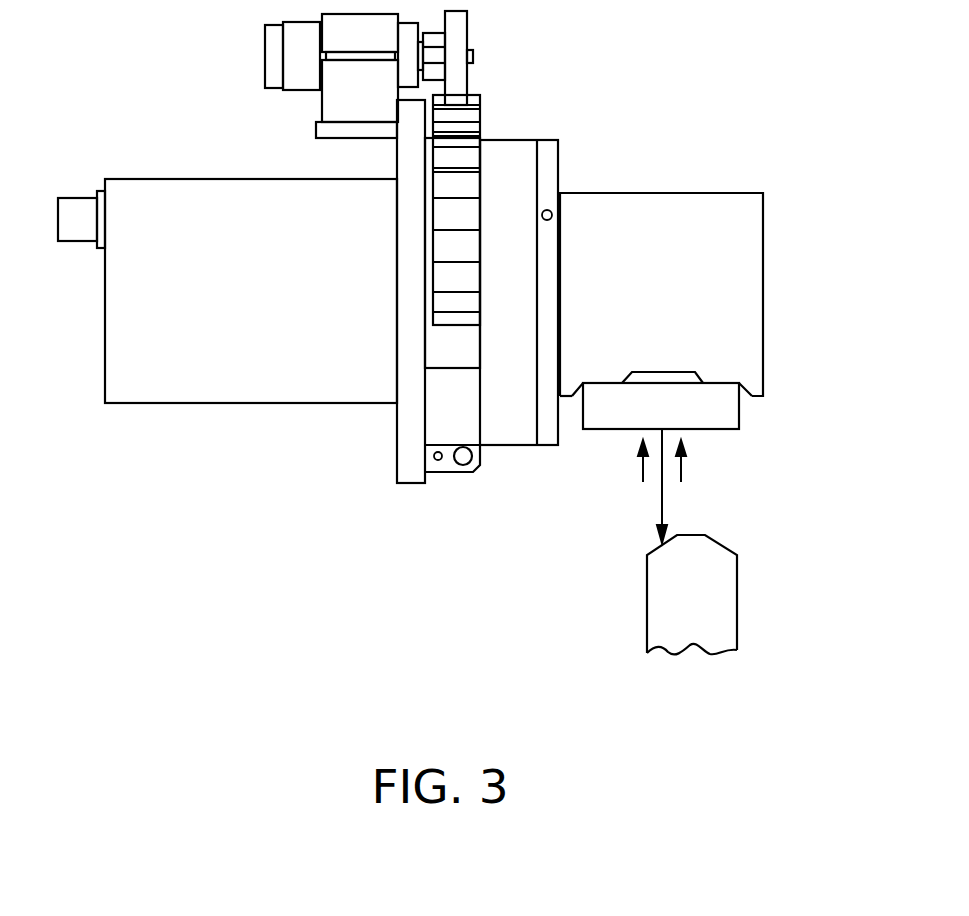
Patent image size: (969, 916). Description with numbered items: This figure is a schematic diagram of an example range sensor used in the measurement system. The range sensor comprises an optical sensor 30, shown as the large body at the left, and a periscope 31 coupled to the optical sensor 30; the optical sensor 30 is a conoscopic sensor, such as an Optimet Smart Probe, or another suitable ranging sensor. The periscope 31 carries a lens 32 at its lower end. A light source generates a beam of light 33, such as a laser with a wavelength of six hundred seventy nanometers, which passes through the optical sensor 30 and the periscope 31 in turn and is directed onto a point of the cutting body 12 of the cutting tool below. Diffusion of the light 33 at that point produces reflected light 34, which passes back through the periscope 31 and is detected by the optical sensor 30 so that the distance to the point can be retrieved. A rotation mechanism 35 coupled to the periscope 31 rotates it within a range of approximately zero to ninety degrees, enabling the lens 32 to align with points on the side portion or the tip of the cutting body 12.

The cutting body 12 is at (727, 605).
The optical sensor 30 is at (208, 390).
The periscope 31 is at (646, 202).
The lens 32 is at (730, 418).
The beam of light 33 is at (665, 497).
The reflected light 34 is at (642, 470).
The rotation mechanism 35 is at (475, 115).